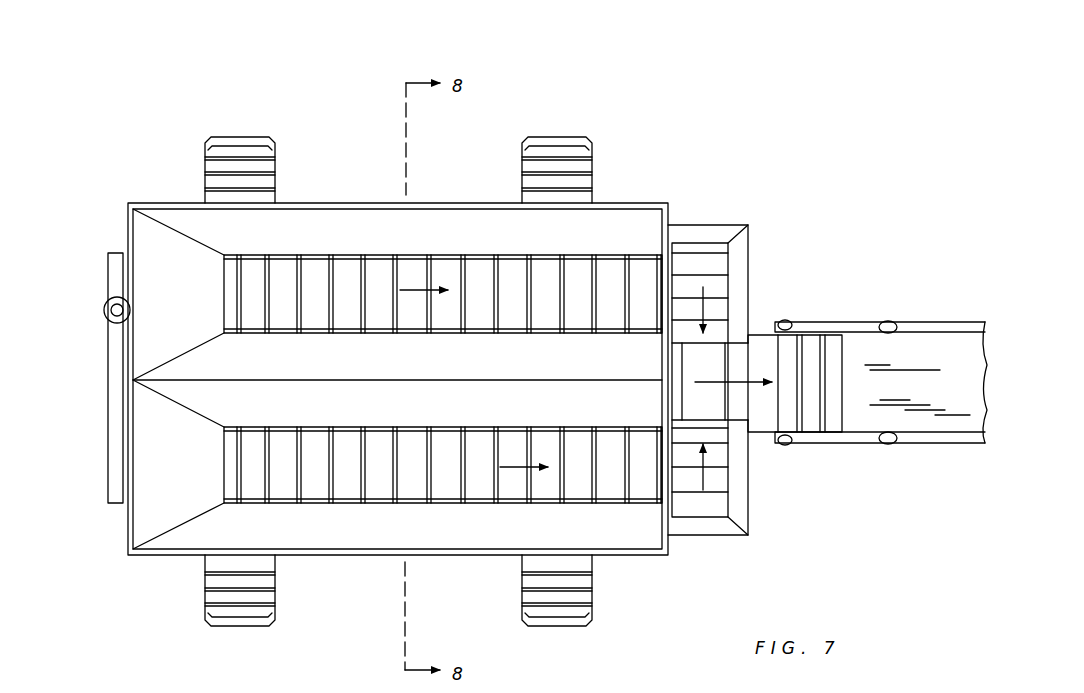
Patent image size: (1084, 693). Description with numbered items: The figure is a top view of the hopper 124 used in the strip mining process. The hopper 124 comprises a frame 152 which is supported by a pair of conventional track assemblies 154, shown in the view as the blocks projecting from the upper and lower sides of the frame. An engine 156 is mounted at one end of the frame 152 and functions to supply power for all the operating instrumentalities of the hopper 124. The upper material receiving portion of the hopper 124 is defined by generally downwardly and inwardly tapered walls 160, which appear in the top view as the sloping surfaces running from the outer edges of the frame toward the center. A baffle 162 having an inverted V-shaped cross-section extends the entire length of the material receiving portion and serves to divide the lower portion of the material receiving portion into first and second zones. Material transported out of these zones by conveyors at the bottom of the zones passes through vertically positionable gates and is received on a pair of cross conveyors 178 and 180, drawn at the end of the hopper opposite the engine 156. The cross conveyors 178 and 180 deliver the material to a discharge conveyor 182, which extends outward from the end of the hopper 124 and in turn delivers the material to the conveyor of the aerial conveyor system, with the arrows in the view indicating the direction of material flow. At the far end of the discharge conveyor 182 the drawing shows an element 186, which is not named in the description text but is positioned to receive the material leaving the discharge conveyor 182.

The hopper 124 is at (313, 168).
The frame 152 is at (119, 508).
The track assemblies 154 is at (205, 161).
The engine 156 is at (105, 413).
The tapered walls 160 is at (160, 248).
The baffle 162 is at (213, 350).
The cross conveyor 178 is at (704, 262).
The cross conveyor 180 is at (709, 506).
The discharge conveyor 182 is at (811, 410).
The stock bar 186 is at (924, 358).